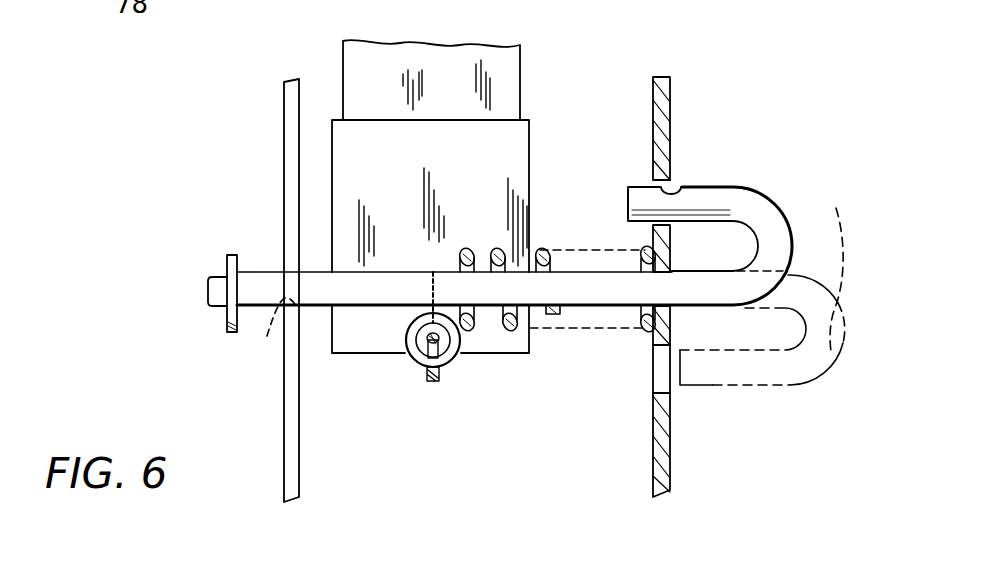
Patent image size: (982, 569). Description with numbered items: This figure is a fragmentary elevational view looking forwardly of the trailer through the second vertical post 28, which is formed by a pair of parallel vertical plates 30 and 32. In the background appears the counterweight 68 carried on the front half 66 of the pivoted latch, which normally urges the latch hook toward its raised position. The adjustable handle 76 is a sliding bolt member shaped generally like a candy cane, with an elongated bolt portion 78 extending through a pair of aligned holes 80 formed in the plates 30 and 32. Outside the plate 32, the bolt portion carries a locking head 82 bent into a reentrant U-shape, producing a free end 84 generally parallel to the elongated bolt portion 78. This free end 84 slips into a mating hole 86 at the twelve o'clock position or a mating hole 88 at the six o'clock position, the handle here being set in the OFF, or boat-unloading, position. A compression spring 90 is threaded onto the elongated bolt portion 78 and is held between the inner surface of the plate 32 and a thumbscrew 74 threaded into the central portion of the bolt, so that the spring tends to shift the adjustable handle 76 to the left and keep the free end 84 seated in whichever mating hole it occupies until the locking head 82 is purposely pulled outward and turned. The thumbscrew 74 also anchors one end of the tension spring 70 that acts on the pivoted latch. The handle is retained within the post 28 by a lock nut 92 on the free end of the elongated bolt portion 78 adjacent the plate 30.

The second vertical post 28 is at (673, 443).
The parallel plate 30 is at (290, 107).
The parallel plate 32 is at (673, 80).
The front half of the pivoted latch 66 is at (462, 58).
The counterweight 68 is at (345, 160).
The tension spring 70 is at (428, 372).
The thumbscrew 74 is at (445, 365).
The adjustable handle 76 is at (793, 233).
The elongated bolt portion 78 is at (620, 280).
The aligned holes 80 is at (650, 272).
The locking head 82 is at (773, 190).
The free end 84 is at (702, 192).
The mating hole 86 is at (682, 185).
The mating hole 88 is at (660, 388).
The compression spring 90 is at (512, 332).
The lock nut 92 is at (233, 253).